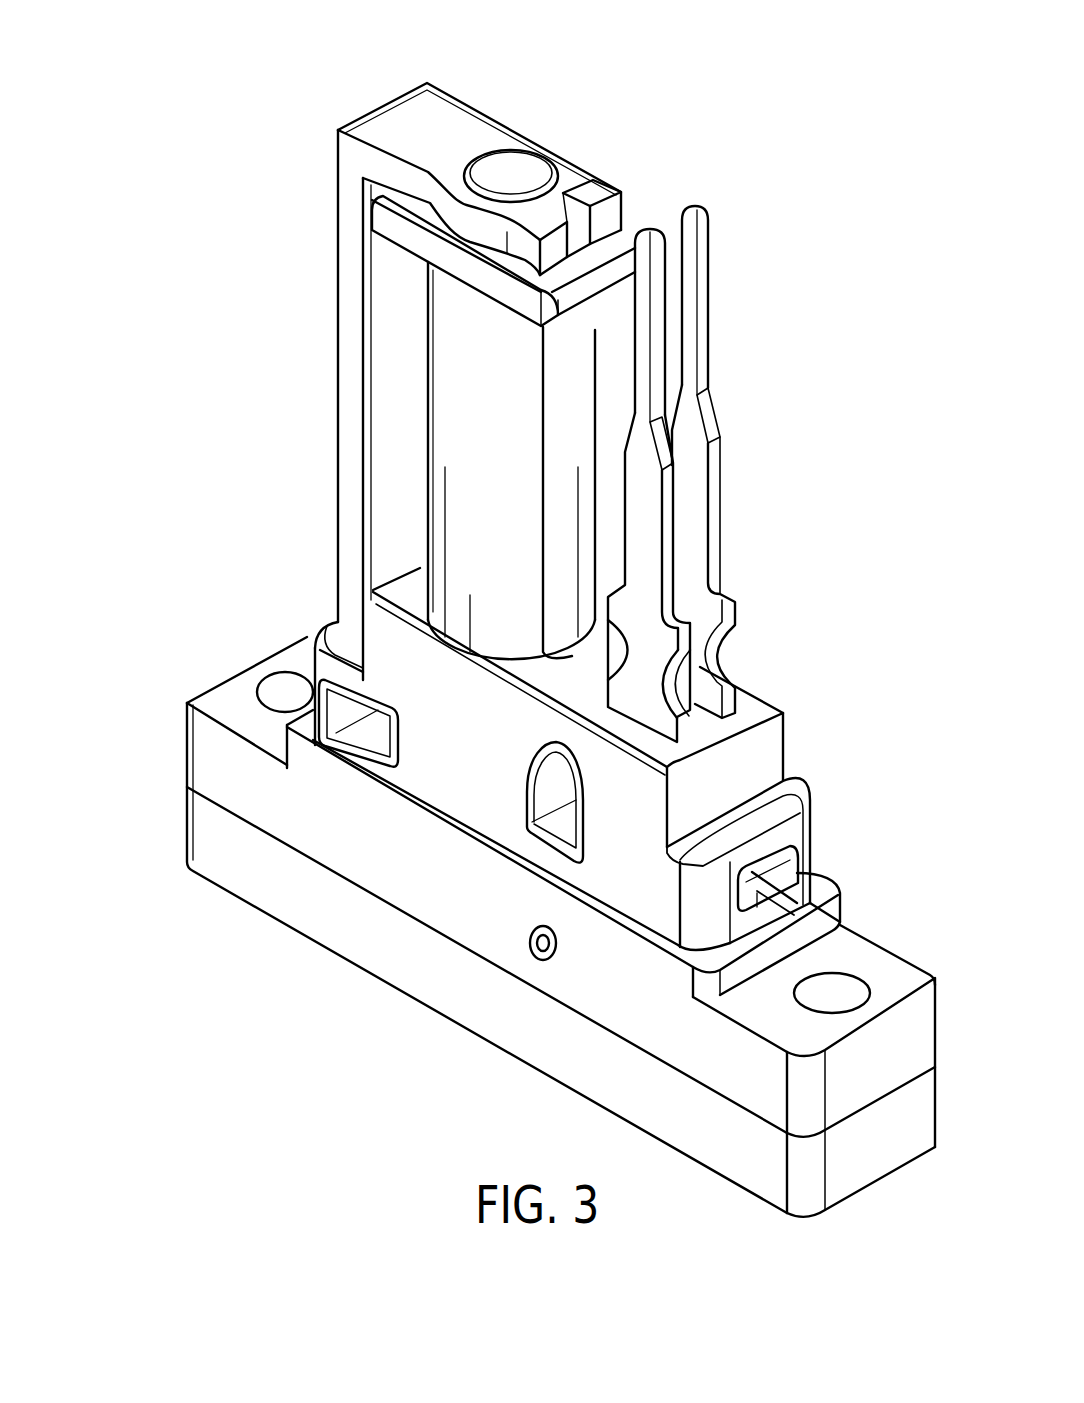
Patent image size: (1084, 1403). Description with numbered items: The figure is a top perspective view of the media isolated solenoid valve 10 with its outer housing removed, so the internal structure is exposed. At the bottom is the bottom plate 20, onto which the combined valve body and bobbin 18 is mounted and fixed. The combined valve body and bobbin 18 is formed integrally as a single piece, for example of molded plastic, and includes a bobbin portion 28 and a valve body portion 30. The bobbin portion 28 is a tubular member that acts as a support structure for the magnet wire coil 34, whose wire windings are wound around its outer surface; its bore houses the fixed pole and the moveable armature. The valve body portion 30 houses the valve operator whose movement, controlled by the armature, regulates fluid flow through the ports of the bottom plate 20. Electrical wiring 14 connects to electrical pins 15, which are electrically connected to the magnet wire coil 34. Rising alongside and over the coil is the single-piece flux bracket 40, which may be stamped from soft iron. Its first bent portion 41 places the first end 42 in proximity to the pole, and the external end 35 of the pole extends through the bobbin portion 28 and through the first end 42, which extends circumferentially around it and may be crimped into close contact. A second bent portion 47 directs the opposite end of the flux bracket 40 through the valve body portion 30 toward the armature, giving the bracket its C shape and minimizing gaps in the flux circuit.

The media isolated solenoid valve 10 is at (203, 360).
The electrical wiring 14 is at (700, 226).
The electrical pins 15 is at (690, 552).
The combined valve body and bobbin 18 is at (200, 654).
The bottom plate 20 is at (187, 822).
The bobbin portion 28 is at (572, 288).
The valve body portion 30 is at (797, 912).
The magnet wire coil 34 is at (462, 440).
The external end of the pole 35 is at (506, 172).
The flux bracket 40 is at (337, 306).
The first bent portion 41 is at (384, 123).
The first end 42 is at (578, 190).
The second bent portion 47 is at (333, 603).